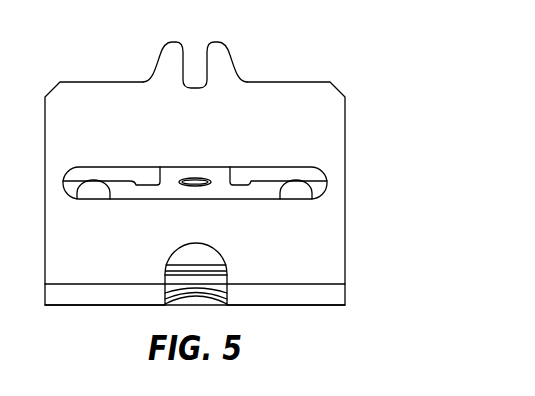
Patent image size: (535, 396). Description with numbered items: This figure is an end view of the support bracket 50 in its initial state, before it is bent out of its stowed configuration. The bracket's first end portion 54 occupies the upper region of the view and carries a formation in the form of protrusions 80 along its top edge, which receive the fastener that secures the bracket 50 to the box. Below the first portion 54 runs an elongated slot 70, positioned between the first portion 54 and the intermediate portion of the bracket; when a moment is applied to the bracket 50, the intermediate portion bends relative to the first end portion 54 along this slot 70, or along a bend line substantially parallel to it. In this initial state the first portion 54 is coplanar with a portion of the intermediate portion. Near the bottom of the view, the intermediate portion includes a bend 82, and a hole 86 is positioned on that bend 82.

The support bracket 50 is at (269, 171).
The first end portion 54 is at (225, 162).
The elongated slot 70 is at (278, 175).
The protrusions 80 is at (146, 43).
The bend 82 is at (313, 297).
The hole 86 is at (216, 256).